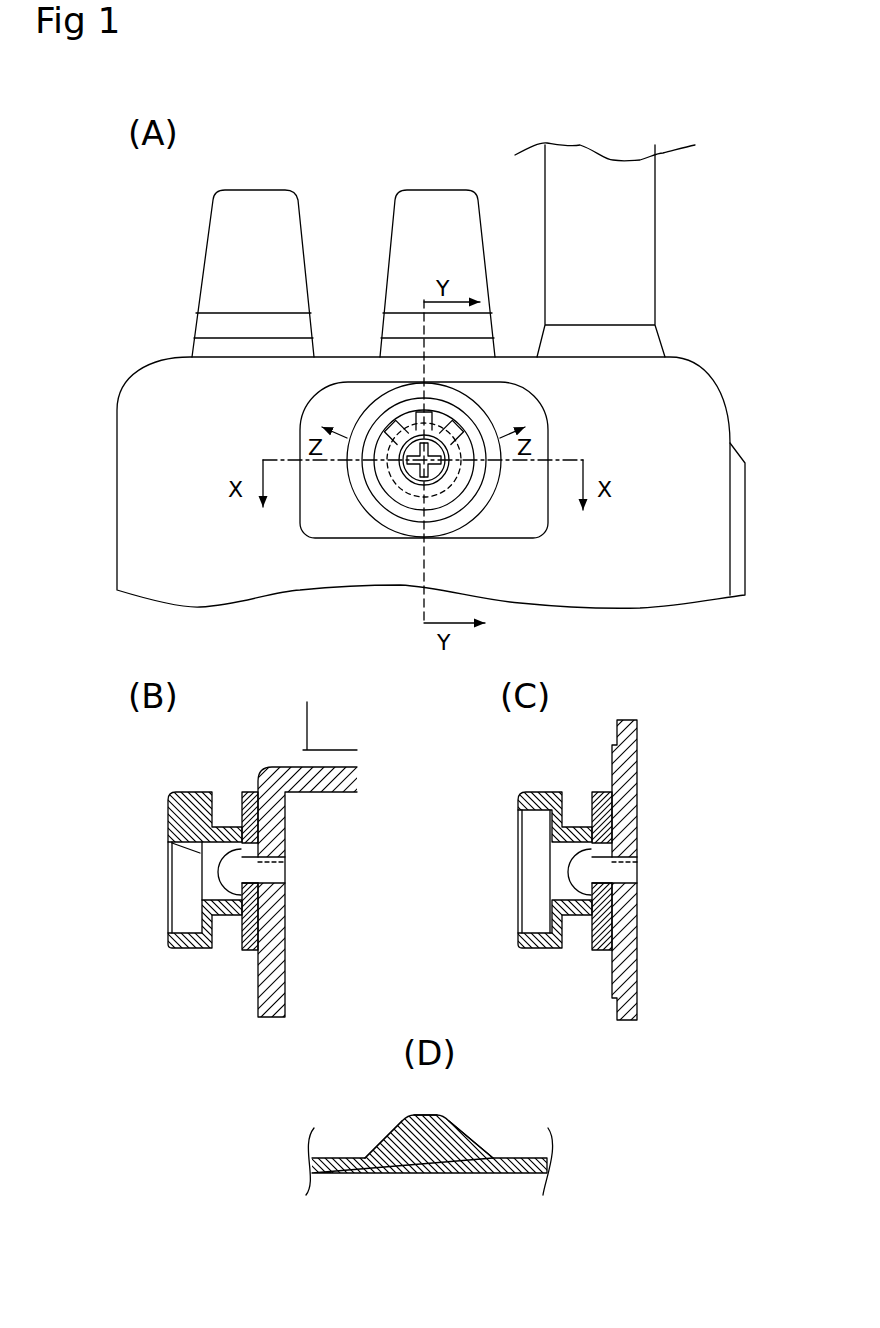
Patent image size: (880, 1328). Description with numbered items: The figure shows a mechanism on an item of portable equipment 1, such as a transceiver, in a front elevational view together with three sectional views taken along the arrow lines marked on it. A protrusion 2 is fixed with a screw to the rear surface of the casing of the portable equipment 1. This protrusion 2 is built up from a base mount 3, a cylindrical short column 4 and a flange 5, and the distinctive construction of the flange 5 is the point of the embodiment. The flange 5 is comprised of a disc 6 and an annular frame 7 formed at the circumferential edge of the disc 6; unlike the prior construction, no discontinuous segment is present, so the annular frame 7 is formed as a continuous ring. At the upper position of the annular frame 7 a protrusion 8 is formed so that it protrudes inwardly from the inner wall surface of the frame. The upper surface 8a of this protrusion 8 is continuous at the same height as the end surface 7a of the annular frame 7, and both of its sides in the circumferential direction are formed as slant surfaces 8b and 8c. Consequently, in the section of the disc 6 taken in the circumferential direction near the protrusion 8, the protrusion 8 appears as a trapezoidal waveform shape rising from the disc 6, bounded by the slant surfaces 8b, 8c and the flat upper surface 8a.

The portable equipment 1 is at (673, 405).
The protrusion 2 is at (555, 540).
The base mount 3 is at (247, 930).
The cylindrical short column 4 is at (413, 495).
The flange 5 is at (475, 517).
The disc 6 is at (445, 510).
The annular frame 7 is at (377, 515).
The end surface of annular frame 7a is at (353, 493).
The protrusion 8 is at (415, 415).
The upper surface 8a is at (165, 822).
The slant surface 8b is at (388, 413).
The slant surface 8c is at (455, 412).